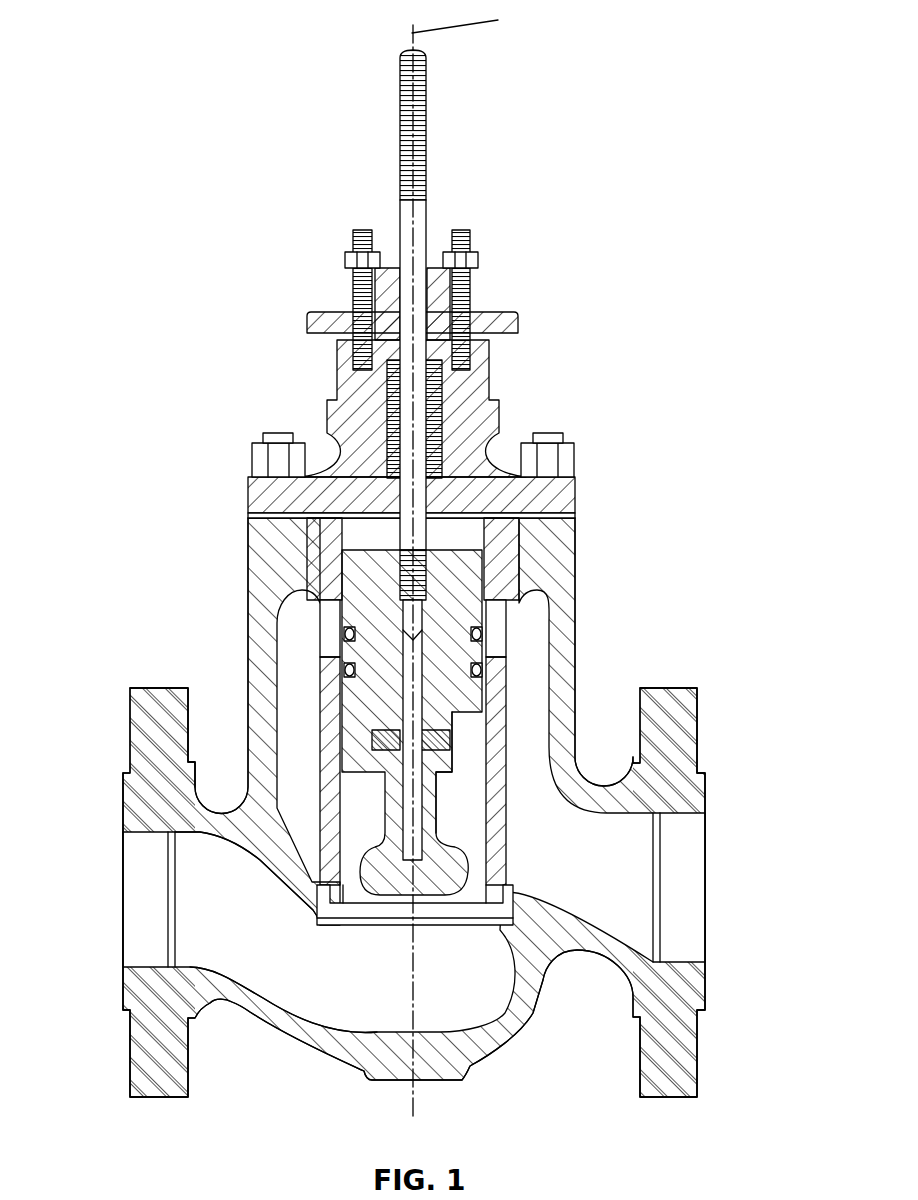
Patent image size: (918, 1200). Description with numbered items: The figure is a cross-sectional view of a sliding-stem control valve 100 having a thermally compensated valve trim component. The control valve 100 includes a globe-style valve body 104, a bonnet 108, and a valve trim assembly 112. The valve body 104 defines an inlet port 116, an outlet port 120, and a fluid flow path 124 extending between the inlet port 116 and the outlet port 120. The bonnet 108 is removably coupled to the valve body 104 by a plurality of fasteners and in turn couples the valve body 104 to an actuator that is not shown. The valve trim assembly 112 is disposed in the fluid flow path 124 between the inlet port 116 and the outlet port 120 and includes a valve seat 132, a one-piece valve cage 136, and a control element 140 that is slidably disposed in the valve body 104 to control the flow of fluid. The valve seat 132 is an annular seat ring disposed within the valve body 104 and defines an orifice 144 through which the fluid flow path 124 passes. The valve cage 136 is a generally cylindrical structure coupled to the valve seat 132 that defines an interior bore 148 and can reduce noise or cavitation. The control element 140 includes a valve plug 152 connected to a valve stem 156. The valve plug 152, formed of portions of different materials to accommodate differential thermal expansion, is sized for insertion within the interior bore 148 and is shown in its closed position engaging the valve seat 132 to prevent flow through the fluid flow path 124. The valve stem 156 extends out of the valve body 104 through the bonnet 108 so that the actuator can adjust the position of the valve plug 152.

The control valve 100 is at (422, 578).
The valve body 104 is at (422, 831).
The bonnet 108 is at (524, 411).
The valve trim assembly 112 is at (491, 627).
The inlet port 116 is at (148, 874).
The outlet port 120 is at (683, 858).
The fluid flow path 124 is at (357, 980).
The valve seat 132 is at (480, 900).
The valve cage 136 is at (505, 672).
The control element 140 is at (590, 455).
The orifice 144 is at (480, 898).
The interior bore 148 is at (479, 802).
The valve plug 152 is at (588, 730).
The valve stem 156 is at (460, 139).